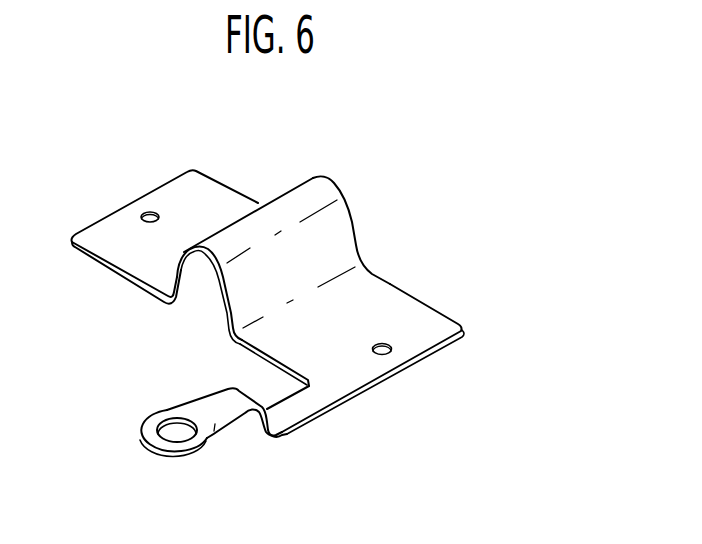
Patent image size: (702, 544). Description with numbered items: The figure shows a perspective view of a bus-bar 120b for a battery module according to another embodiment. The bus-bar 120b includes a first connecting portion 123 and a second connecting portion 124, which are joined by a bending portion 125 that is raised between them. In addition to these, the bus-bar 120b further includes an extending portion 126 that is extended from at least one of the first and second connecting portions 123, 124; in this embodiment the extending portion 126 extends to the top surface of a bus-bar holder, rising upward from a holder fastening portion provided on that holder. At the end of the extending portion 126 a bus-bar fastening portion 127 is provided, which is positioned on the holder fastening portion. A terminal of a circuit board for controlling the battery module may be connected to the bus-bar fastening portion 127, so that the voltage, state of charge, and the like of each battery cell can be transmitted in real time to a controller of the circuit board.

The bus-bar 120b is at (581, 153).
The first connecting portion 123 is at (245, 165).
The second connecting portion 124 is at (434, 276).
The bending portion 125 is at (364, 170).
The extending portion 126 is at (205, 378).
The bus-bar fastening portion 127 is at (155, 442).